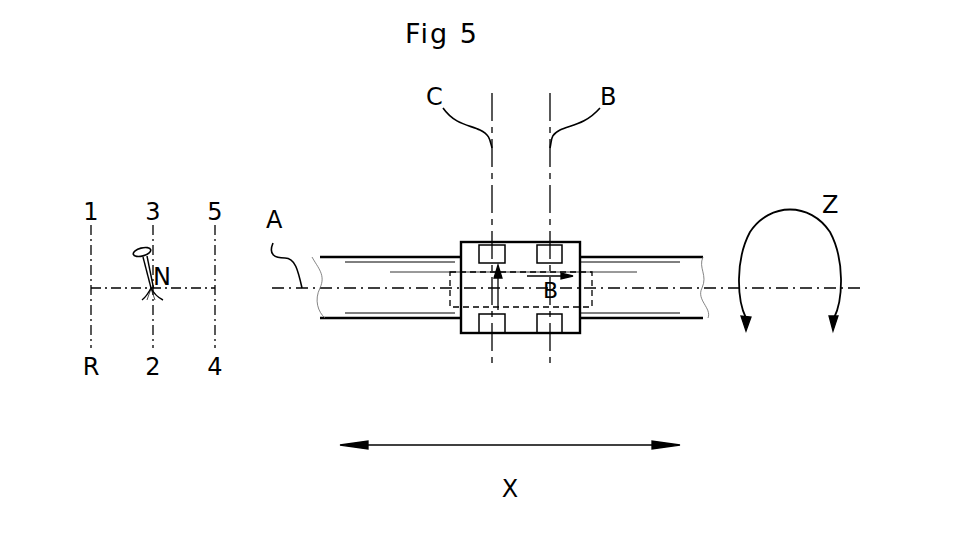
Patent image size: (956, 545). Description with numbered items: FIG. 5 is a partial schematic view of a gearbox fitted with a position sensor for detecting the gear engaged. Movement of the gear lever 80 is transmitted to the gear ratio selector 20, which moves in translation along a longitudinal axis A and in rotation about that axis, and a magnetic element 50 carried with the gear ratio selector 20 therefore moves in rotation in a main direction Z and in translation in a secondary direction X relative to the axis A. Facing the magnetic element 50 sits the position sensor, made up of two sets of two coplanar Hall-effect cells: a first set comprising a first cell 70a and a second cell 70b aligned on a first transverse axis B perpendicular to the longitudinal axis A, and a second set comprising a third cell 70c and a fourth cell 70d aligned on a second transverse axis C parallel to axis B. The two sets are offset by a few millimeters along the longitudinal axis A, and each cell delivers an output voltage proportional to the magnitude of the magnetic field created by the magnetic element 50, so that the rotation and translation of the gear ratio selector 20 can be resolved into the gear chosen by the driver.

The gear lever 80 is at (145, 247).
The gear ratio selector 20 is at (672, 265).
The magnetic element 50 is at (452, 300).
The first cell 70a is at (558, 245).
The second cell 70b is at (558, 333).
The third cell 70c is at (483, 245).
The fourth cell 70d is at (483, 333).